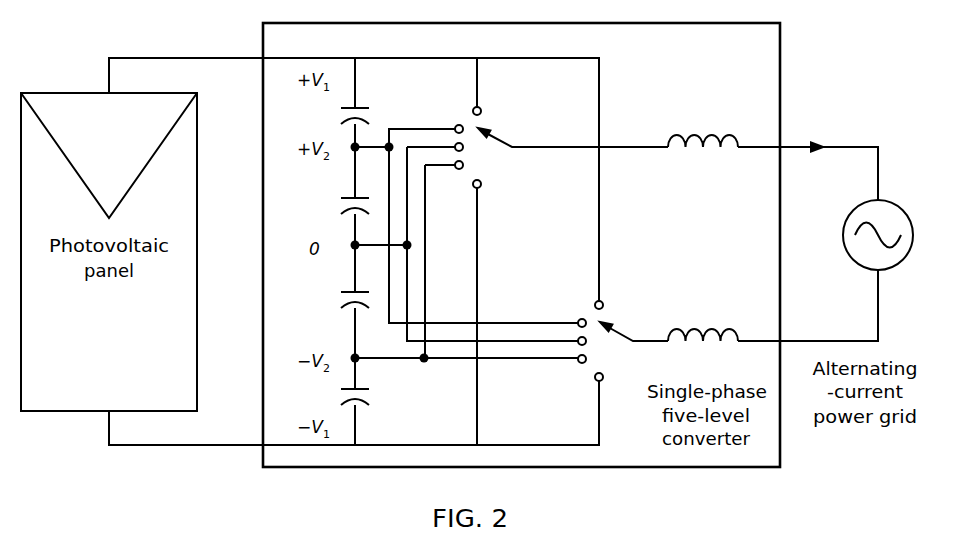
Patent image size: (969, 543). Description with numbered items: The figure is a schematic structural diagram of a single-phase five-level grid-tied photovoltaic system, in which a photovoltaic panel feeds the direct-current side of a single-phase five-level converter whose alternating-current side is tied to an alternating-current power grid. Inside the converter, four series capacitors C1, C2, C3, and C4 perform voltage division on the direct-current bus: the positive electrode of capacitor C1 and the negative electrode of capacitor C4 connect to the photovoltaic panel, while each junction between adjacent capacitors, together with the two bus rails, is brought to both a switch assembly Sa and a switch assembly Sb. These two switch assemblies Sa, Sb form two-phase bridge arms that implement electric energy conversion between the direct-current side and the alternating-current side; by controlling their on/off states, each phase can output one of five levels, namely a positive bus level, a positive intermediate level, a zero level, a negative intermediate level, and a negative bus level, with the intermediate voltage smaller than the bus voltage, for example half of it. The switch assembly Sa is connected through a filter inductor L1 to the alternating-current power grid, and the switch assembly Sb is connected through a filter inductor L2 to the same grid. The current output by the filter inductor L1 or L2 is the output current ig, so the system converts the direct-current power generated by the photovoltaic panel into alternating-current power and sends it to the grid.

The capacitor C1 is at (373, 110).
The capacitor C2 is at (335, 206).
The capacitor C3 is at (335, 302).
The capacitor C4 is at (373, 400).
The switch assembly Sa is at (561, 147).
The switch assembly Sb is at (623, 341).
The filter inductor L1 is at (703, 124).
The filter inductor L2 is at (703, 311).
The output current ig is at (808, 129).